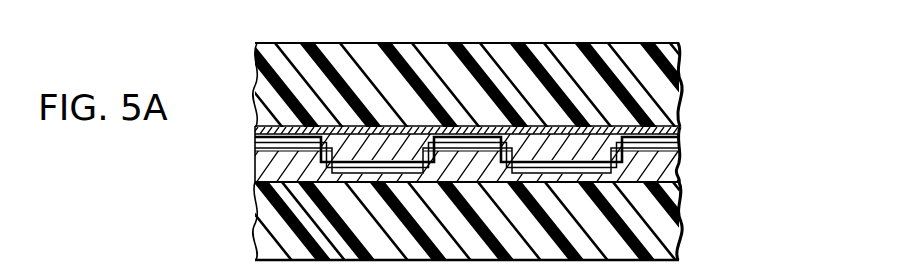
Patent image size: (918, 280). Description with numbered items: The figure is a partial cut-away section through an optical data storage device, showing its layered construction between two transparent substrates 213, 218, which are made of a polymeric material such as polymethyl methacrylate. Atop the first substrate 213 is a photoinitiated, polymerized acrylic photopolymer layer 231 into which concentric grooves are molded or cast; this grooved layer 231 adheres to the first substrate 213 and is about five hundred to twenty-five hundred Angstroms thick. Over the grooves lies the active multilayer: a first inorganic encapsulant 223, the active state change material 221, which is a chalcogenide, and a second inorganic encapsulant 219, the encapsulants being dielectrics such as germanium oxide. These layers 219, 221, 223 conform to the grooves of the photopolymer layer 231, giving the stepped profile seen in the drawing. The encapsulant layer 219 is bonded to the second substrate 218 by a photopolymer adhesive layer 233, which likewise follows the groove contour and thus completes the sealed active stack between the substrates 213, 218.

The substrate 218 is at (663, 91).
The adhesive layer 233 is at (672, 131).
The second layer of inorganic encapsulant 219 is at (674, 138).
The active state change material 221 is at (674, 143).
The inorganic encapsulant 223 is at (674, 148).
The photopolymer layer 231 is at (662, 172).
The substrate 213 is at (665, 229).